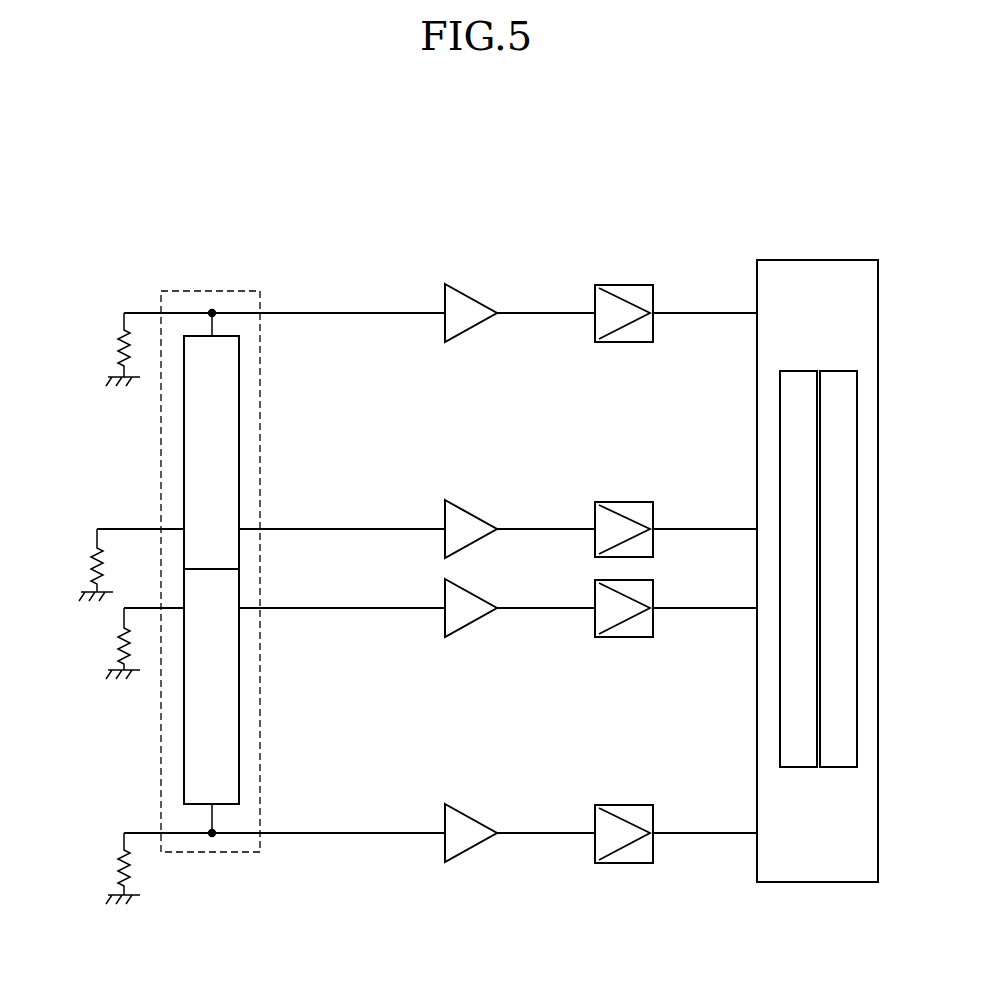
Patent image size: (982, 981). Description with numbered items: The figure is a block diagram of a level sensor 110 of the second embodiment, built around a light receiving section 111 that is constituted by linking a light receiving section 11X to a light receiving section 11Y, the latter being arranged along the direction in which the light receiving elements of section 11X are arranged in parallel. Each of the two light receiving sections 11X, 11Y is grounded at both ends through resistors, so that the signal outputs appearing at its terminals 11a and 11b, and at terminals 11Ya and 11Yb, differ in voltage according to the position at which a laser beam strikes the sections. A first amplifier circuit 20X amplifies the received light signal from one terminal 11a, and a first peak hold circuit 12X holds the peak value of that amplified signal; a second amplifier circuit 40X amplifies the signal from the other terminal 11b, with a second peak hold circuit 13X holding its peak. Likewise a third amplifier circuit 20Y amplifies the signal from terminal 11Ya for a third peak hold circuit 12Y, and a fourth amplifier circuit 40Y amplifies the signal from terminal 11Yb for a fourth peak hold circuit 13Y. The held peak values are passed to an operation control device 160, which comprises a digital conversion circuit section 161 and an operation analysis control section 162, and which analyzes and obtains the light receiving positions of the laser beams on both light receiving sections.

The level sensor 110 is at (513, 160).
The light receiving section 111 is at (212, 291).
The light receiving section 11X is at (239, 384).
The light receiving section 11Y is at (239, 718).
The one terminal 11a is at (307, 313).
The other terminal 11b is at (307, 529).
The one terminal 11Ya is at (307, 608).
The other terminal 11Yb is at (307, 833).
The first amplifier circuit 20X is at (462, 290).
The second amplifier circuit 40X is at (462, 506).
The third amplifier circuit 20Y is at (465, 627).
The fourth amplifier circuit 40Y is at (462, 808).
The first peak hold circuit 12X is at (630, 285).
The second peak hold circuit 13X is at (630, 502).
The third peak hold circuit 12Y is at (622, 637).
The fourth peak hold circuit 13Y is at (630, 805).
The operation control device 160 is at (817, 260).
The digital conversion circuit section 161 is at (797, 371).
The operation analysis control section 162 is at (846, 371).